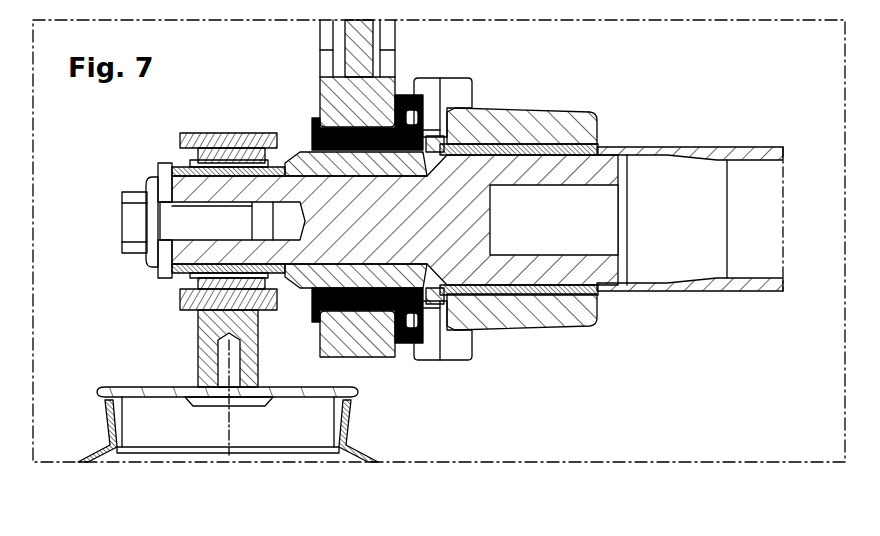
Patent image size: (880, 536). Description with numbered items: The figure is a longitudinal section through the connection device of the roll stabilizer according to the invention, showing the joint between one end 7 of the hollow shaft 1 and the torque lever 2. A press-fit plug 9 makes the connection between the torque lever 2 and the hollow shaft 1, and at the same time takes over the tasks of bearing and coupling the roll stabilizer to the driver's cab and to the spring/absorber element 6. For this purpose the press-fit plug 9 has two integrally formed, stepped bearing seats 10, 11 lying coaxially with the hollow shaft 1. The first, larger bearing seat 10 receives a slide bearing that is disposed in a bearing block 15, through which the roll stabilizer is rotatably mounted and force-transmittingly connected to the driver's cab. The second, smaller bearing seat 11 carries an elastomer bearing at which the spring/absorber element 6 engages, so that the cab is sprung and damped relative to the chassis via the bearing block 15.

The hollow shaft 1 is at (613, 174).
The end of the hollow shaft 7 is at (668, 150).
The torque lever 2 is at (527, 310).
The spring/absorber element 6 is at (168, 333).
The press-fit plug 9 is at (399, 220).
The first bearing seat 10 is at (352, 182).
The second bearing seat 11 is at (238, 183).
The bearing block 15 is at (357, 92).